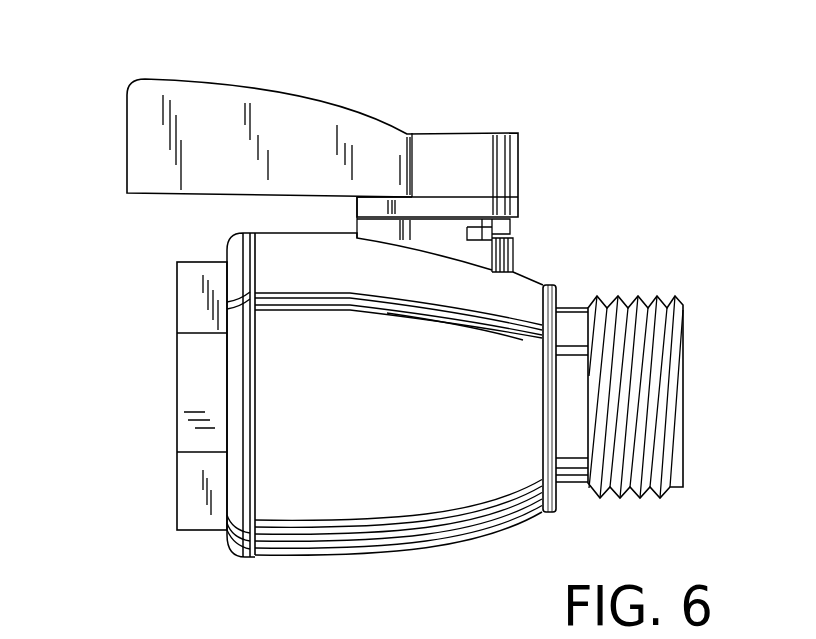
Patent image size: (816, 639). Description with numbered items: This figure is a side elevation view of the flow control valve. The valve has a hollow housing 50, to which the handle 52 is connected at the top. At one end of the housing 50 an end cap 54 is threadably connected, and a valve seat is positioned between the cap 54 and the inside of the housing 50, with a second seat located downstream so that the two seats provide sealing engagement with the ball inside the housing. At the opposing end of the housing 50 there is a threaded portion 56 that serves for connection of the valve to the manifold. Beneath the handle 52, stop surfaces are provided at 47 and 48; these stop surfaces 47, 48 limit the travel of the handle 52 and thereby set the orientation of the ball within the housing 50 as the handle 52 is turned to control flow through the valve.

The stop surface 47 is at (508, 233).
The stop surface 48 is at (508, 223).
The housing 50 is at (322, 557).
The handle 52 is at (273, 88).
The end cap 54 is at (177, 280).
The threaded portion 56 is at (652, 298).